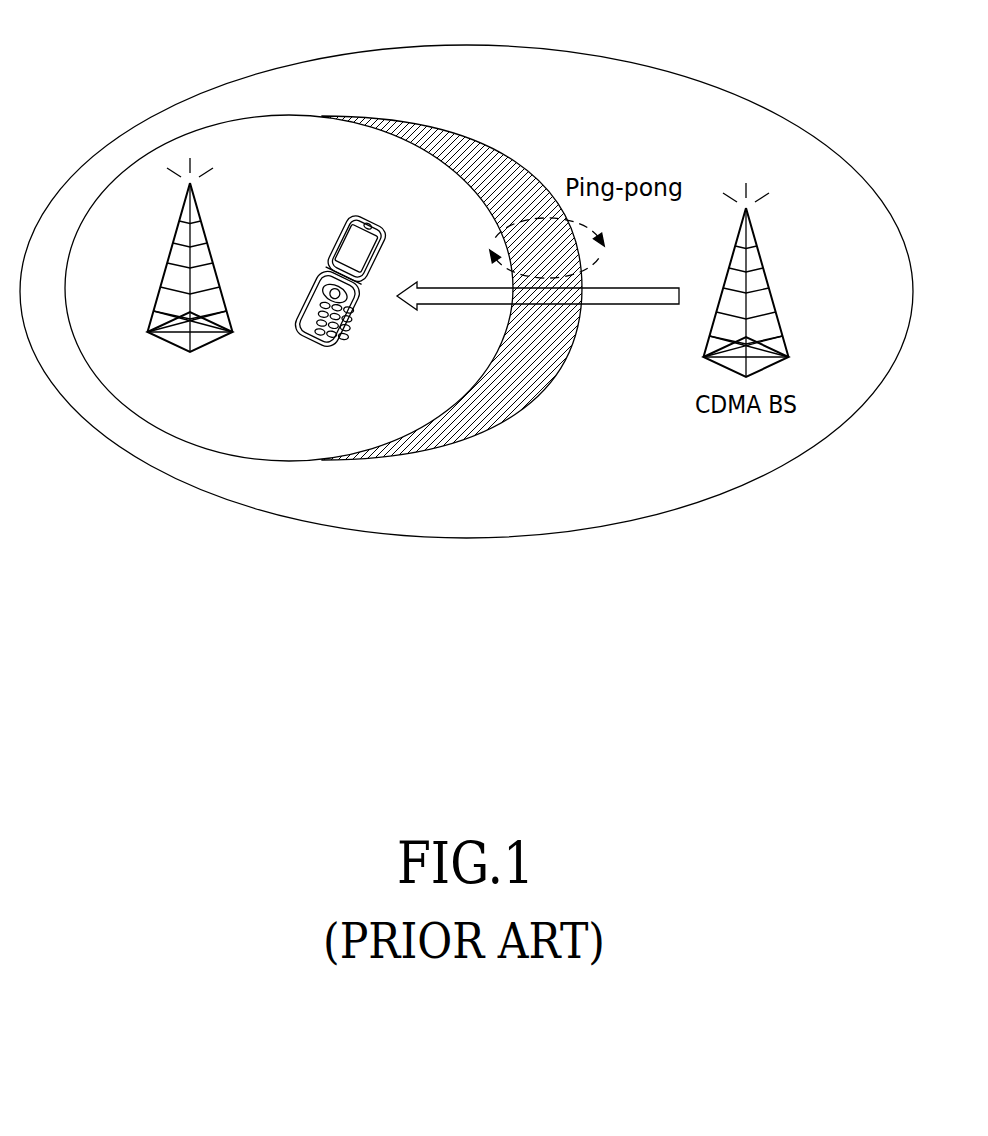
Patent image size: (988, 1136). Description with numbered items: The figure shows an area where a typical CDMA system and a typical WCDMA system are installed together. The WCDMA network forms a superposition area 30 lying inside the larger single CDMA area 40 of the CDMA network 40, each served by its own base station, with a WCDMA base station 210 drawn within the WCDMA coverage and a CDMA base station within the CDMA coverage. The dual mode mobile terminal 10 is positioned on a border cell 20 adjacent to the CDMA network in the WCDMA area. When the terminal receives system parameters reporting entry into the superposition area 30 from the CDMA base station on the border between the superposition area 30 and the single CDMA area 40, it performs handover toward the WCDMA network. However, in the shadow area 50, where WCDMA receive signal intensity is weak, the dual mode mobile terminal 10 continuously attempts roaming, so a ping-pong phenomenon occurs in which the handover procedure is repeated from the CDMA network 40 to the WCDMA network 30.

The dual mode mobile terminal 10 is at (388, 250).
The border cell 20 is at (527, 320).
The superposition area 30 is at (267, 115).
The single CDMA area 40 is at (512, 46).
The shadow area 50 is at (502, 151).
The WCDMA base station 210 is at (213, 263).